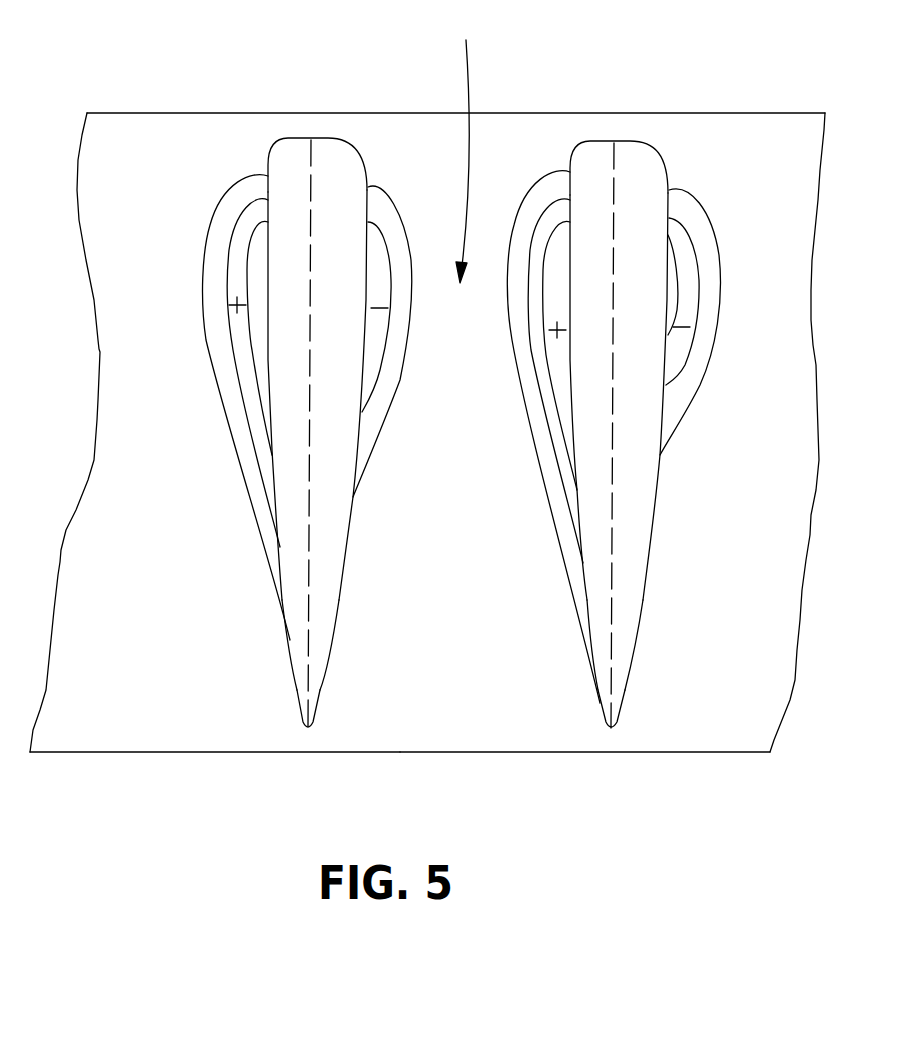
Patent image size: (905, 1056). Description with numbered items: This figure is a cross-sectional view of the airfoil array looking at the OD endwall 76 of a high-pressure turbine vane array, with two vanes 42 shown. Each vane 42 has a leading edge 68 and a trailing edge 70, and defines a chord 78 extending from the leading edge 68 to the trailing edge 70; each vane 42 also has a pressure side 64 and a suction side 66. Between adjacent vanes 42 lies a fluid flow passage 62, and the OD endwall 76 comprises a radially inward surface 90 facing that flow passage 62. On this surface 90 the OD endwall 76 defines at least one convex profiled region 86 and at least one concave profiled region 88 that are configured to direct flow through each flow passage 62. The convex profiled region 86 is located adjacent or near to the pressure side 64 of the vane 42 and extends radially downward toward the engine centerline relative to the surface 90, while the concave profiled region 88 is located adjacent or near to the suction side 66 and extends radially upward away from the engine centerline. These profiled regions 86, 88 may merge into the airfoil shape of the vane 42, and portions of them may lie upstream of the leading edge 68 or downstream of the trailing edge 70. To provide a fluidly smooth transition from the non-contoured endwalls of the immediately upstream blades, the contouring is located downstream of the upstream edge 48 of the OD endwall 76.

The vane 42 is at (344, 336).
The upstream edge 48 is at (742, 113).
The fluid flow passage 62 is at (467, 148).
The pressure side 64 is at (293, 668).
The suction side 66 is at (350, 537).
The leading edge 68 is at (305, 138).
The trailing edge 70 is at (305, 728).
The OD endwall 76 is at (702, 687).
The chord 78 is at (308, 558).
The convex profiled region 86 is at (243, 360).
The concave profiled region 88 is at (387, 373).
The radially inward surface 90 is at (132, 730).